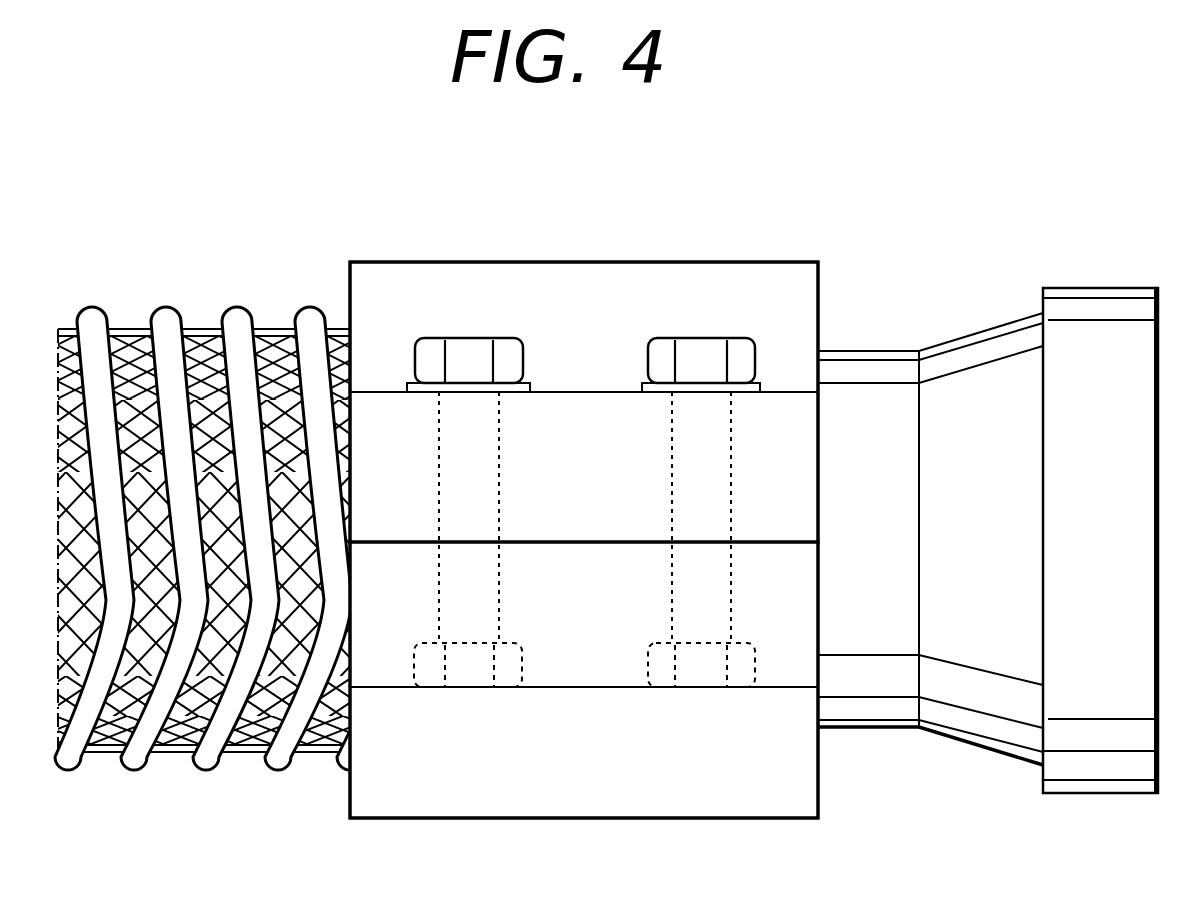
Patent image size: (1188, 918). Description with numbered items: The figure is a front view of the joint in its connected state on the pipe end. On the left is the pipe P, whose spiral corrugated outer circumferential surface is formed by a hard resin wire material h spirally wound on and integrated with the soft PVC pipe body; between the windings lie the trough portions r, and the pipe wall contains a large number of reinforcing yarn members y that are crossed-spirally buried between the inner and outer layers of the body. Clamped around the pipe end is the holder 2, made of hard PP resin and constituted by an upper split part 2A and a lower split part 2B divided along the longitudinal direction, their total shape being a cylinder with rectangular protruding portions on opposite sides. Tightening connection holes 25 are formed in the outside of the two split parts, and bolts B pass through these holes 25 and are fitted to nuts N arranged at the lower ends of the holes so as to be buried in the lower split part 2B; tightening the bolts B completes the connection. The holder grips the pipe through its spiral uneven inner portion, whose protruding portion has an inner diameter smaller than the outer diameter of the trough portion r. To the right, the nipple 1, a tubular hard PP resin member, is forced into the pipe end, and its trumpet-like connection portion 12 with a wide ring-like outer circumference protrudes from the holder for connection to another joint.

The pipe P is at (236, 462).
The hard resin wire material h is at (164, 320).
The trough portion r is at (204, 325).
The reinforcing yarn members y is at (277, 323).
The holder 2 is at (663, 512).
The upper split part 2A is at (820, 305).
The lower split part 2B is at (818, 792).
The tightening connection holes 25 is at (718, 590).
The bolts B is at (472, 357).
The nuts N is at (710, 670).
The nipple 1 is at (935, 318).
The connection portion 12 is at (1095, 307).